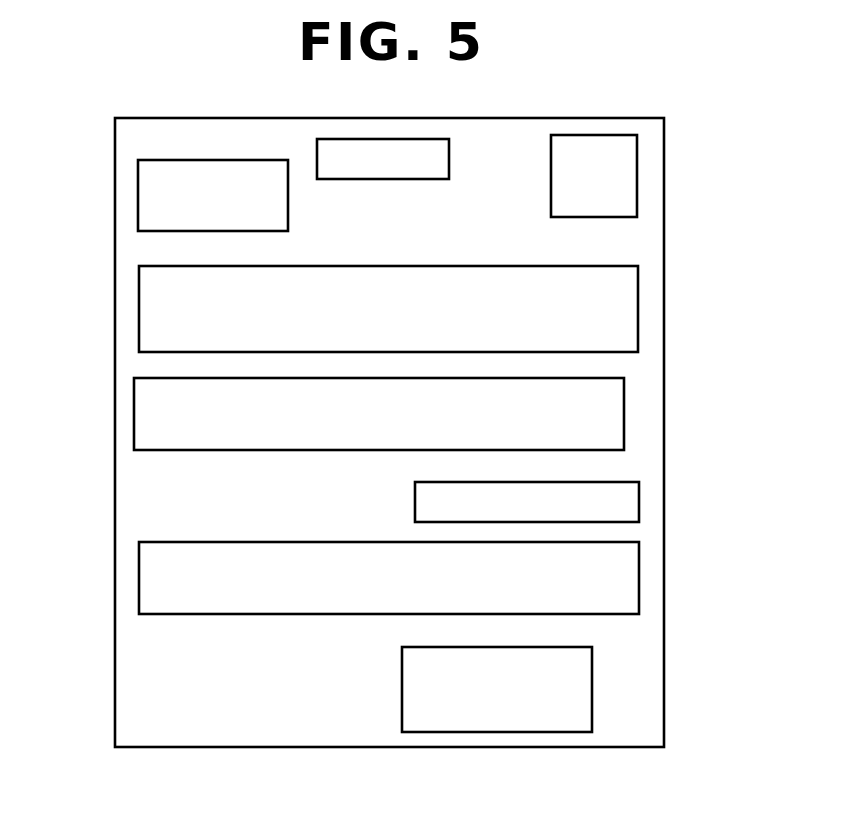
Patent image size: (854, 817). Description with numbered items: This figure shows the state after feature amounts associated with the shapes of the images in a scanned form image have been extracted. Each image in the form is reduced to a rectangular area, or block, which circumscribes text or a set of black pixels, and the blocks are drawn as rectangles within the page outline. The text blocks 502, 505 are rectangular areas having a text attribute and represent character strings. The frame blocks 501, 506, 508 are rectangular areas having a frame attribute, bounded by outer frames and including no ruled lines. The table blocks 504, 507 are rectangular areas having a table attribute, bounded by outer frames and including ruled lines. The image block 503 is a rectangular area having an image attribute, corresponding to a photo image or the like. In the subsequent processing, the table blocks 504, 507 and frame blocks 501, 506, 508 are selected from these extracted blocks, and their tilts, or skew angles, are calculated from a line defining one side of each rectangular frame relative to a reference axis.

The frame block 501 is at (138, 192).
The text block 502 is at (382, 180).
The image block 503 is at (637, 170).
The table block 504 is at (638, 307).
The text block 505 is at (134, 410).
The frame block 506 is at (415, 497).
The table block 507 is at (639, 578).
The frame block 508 is at (402, 683).